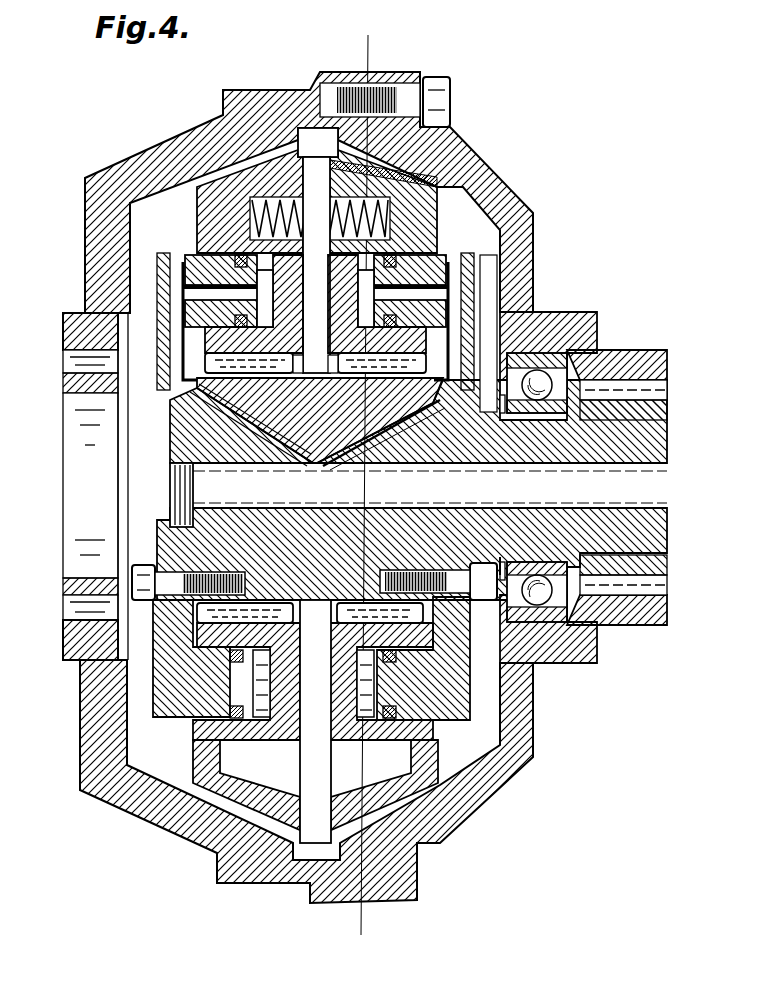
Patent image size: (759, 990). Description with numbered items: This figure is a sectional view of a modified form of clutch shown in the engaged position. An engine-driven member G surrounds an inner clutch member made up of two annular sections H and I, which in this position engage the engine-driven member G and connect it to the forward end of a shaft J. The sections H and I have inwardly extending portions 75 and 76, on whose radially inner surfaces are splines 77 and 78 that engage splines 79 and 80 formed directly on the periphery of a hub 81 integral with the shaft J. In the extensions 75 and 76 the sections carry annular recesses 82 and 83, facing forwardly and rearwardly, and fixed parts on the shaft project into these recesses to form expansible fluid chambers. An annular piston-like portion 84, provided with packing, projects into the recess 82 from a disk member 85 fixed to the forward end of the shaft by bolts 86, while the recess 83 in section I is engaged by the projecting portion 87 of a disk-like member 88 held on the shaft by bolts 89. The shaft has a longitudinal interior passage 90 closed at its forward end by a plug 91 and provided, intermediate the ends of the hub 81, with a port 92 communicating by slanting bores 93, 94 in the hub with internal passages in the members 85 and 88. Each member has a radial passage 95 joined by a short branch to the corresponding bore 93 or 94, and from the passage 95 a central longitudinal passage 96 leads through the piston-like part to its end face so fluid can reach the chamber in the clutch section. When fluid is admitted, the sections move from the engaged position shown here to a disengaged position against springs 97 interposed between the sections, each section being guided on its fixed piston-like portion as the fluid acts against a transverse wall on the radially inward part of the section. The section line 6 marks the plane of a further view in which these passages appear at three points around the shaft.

The engine-driven member G is at (192, 142).
The clutch section H is at (210, 215).
The clutch section I is at (430, 222).
The shaft J is at (660, 445).
The section line 6- 6 is at (362, 40).
The inwardly extending portion 75 is at (306, 292).
The inwardly extending portion 76 is at (330, 312).
The splines 77 is at (205, 360).
The splines 78 is at (535, 312).
The splines 79 is at (215, 400).
The splines 80 is at (335, 372).
The hub 81 is at (260, 410).
The annular groove or recess 82 is at (235, 247).
The annular groove or recess 83 is at (420, 252).
The annular piston-like portion 84 is at (185, 262).
The disk member 85 is at (160, 322).
The bolts 86 is at (165, 582).
The projecting portion 87 is at (500, 248).
The disk-like member 88 is at (600, 325).
The bolts 89 is at (475, 640).
The longitudinal interior passage 90 is at (665, 487).
The plug 91 is at (170, 488).
The port 92 is at (316, 460).
The slanting bore 93 is at (282, 440).
The slanting bore 94 is at (405, 418).
The radial passage 95 is at (182, 315).
The central longitudinal passage 96 is at (185, 292).
The springs 97 is at (318, 250).